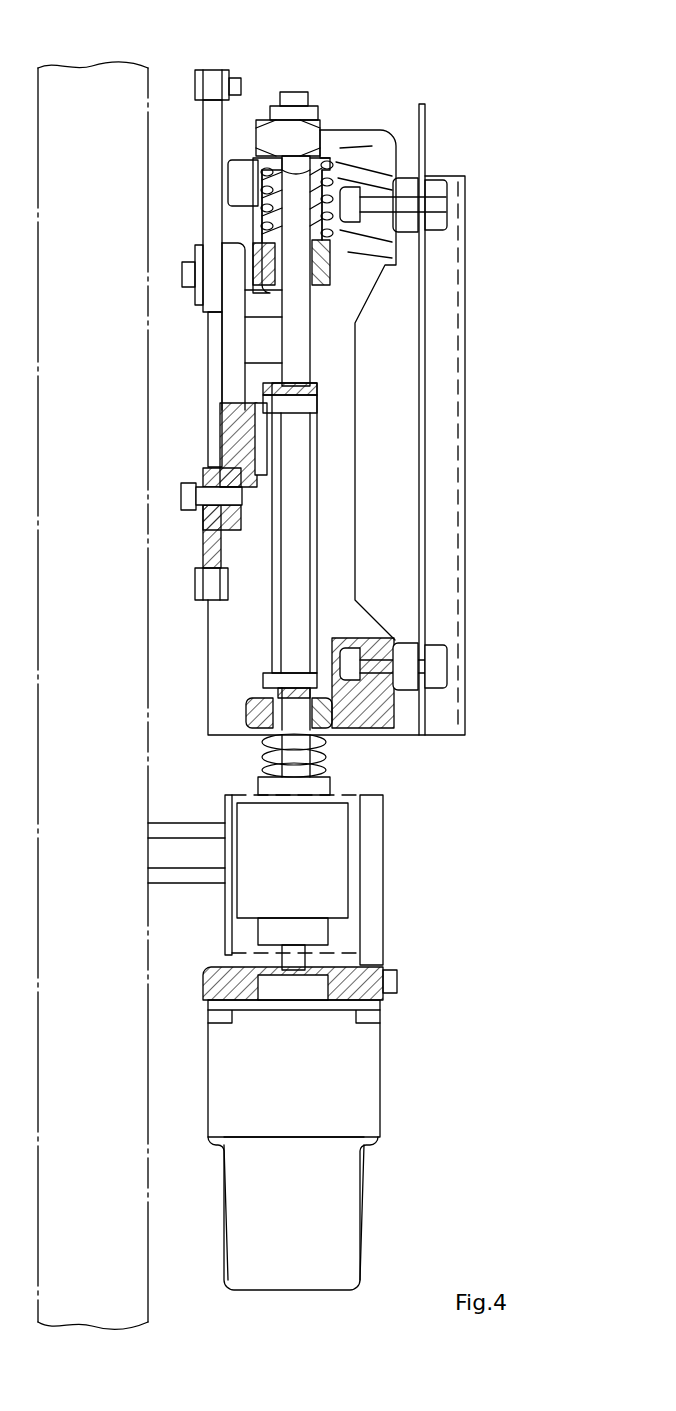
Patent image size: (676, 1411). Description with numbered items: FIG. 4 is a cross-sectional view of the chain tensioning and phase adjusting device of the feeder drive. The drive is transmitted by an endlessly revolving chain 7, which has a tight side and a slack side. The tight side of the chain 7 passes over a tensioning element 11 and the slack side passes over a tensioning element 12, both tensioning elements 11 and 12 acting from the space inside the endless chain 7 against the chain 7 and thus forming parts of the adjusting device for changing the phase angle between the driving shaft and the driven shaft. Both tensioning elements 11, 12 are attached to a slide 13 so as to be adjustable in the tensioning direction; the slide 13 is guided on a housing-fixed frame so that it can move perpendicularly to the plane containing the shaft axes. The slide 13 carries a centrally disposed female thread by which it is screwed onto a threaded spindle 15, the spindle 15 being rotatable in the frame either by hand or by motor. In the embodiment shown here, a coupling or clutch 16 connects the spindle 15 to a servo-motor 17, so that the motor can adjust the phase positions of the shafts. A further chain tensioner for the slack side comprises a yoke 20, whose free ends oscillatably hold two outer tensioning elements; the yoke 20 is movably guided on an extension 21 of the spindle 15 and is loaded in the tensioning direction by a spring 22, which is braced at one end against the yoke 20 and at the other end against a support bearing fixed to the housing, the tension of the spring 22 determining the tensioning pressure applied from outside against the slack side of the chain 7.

The endlessly revolving chain 7 is at (213, 84).
The tensioning element 11 is at (206, 546).
The tensioning element 12 is at (205, 152).
The slide 13 is at (326, 440).
The threaded spindle 15 is at (284, 622).
The coupling or clutch 16 is at (246, 906).
The servo-motor 17 is at (372, 1088).
The yoke 20 is at (308, 280).
The extension of the spindle 21 is at (296, 332).
The spring 22 is at (224, 188).